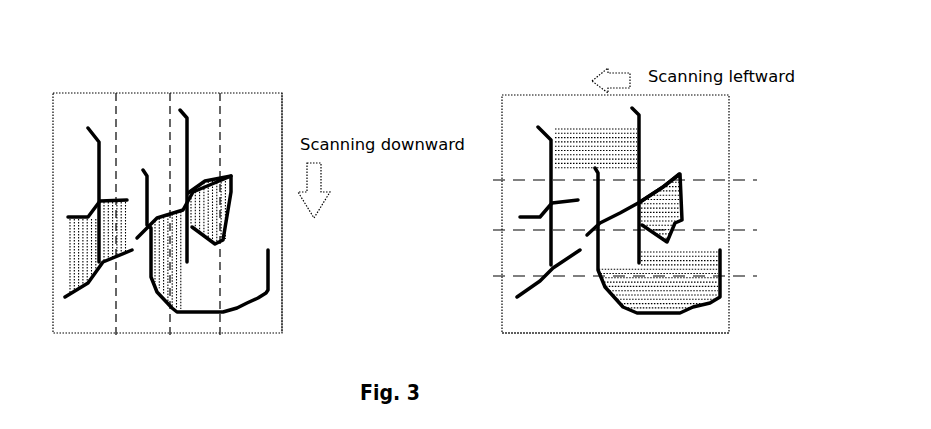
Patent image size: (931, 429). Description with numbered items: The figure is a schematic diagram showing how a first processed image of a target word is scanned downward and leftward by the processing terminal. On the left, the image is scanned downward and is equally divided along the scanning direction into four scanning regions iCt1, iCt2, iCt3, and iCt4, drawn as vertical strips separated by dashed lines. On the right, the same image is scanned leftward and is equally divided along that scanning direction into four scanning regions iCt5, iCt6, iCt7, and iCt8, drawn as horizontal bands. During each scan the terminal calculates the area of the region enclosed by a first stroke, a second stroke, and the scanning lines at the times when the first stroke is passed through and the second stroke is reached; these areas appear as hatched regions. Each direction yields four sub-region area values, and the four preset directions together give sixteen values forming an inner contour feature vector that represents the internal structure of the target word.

The scanning region iCt1 is at (91, 204).
The scanning region iCt2 is at (147, 204).
The scanning region iCt3 is at (199, 204).
The scanning region iCt4 is at (257, 202).
The scanning region iCt5 is at (636, 155).
The scanning region iCt6 is at (636, 216).
The scanning region iCt7 is at (636, 261).
The scanning region iCt8 is at (641, 316).